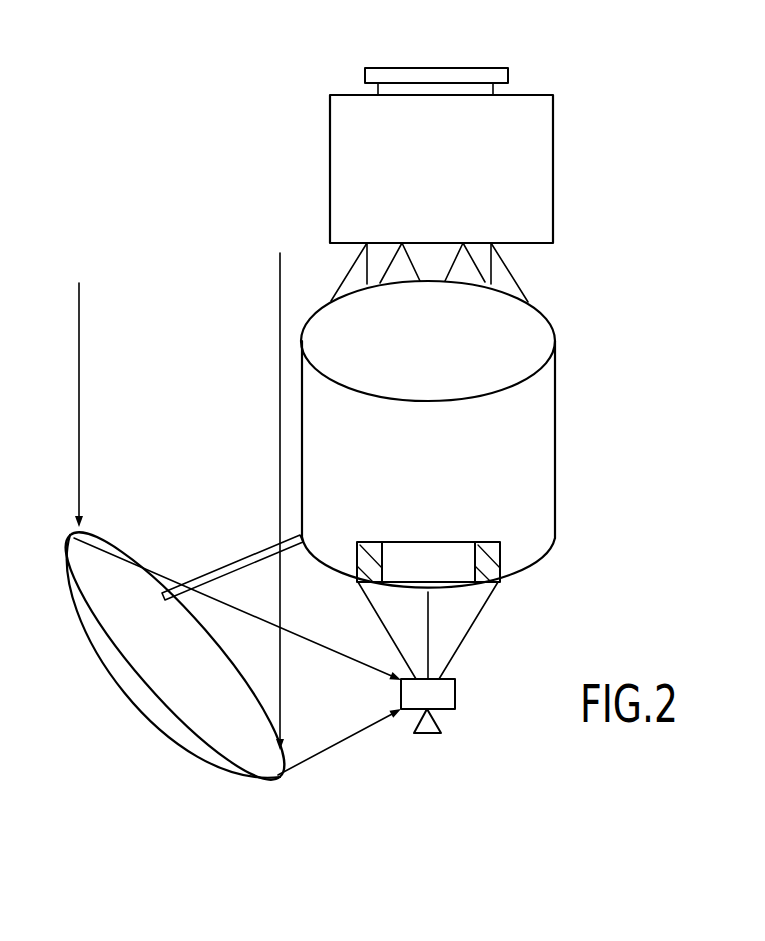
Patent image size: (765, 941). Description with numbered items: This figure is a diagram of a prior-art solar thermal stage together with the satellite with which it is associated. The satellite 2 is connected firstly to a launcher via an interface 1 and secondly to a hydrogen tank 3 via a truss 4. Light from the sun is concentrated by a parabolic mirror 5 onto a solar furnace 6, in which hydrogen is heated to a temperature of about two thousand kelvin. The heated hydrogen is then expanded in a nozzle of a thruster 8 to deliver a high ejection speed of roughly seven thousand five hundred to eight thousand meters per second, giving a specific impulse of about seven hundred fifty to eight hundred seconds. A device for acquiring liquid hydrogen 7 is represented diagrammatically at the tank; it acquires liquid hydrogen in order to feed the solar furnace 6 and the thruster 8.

The interface 1 is at (436, 78).
The satellite 2 is at (336, 148).
The hydrogen tank 3 is at (302, 421).
The truss 4 is at (346, 272).
The parabolic mirror 5 is at (133, 680).
The solar furnace 6 is at (456, 688).
The device for acquiring liquid hydrogen 7 is at (486, 541).
The thruster 8 is at (436, 722).